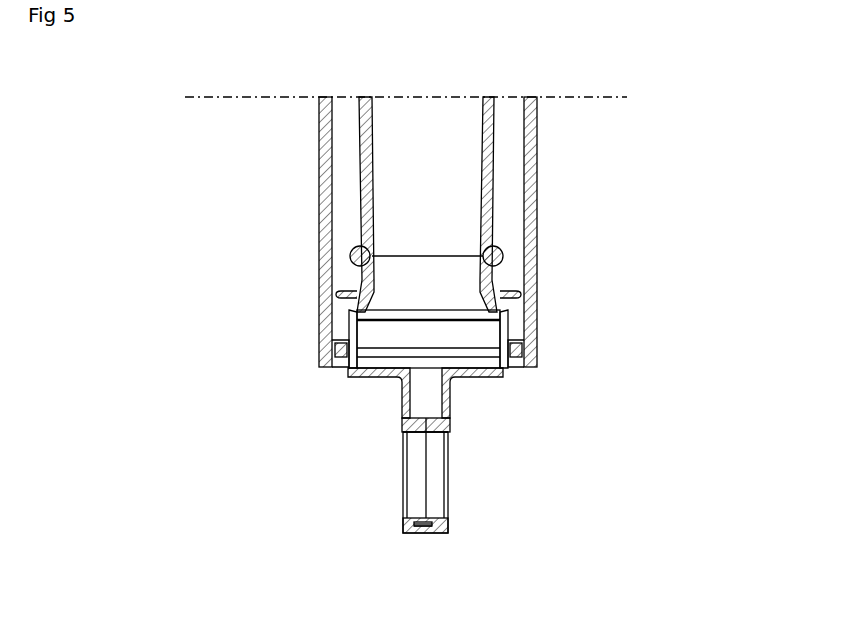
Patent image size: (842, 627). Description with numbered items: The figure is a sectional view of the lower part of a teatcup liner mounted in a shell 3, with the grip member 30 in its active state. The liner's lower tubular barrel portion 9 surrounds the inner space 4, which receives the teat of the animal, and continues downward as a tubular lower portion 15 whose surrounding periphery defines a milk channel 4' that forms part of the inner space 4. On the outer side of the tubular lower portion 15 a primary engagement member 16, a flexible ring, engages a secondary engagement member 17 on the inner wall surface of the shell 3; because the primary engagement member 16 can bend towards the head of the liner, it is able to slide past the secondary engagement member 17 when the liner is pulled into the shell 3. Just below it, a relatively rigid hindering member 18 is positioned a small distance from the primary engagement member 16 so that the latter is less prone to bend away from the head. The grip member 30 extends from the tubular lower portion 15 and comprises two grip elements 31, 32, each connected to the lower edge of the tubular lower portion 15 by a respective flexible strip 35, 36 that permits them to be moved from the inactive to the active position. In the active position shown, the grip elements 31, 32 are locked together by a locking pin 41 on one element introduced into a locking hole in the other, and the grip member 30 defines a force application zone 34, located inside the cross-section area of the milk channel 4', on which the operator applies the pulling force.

The shell 3 is at (530, 133).
The inner space 4 is at (420, 147).
The milk channel 4' is at (428, 339).
The lower tubular barrel portion 9 is at (492, 122).
The tubular lower portion 15 is at (362, 290).
The primary engagement member 16 is at (507, 292).
The secondary engagement member 17 is at (522, 340).
The hindering member 18 is at (517, 300).
The grip member 30 is at (385, 500).
The grip element 31 is at (450, 430).
The grip element 32 is at (407, 432).
The force application zone 34 is at (435, 517).
The flexible strip 35 is at (450, 383).
The flexible strip 36 is at (403, 387).
The locking pin 41 is at (420, 533).